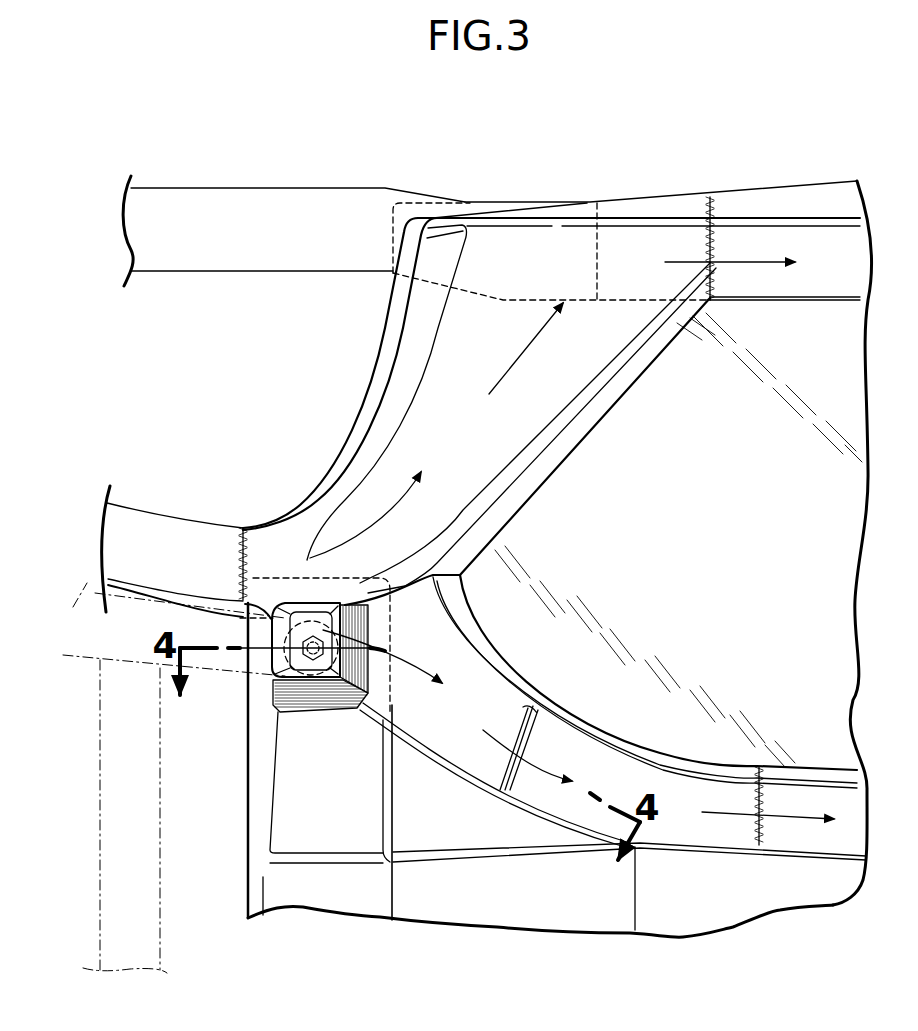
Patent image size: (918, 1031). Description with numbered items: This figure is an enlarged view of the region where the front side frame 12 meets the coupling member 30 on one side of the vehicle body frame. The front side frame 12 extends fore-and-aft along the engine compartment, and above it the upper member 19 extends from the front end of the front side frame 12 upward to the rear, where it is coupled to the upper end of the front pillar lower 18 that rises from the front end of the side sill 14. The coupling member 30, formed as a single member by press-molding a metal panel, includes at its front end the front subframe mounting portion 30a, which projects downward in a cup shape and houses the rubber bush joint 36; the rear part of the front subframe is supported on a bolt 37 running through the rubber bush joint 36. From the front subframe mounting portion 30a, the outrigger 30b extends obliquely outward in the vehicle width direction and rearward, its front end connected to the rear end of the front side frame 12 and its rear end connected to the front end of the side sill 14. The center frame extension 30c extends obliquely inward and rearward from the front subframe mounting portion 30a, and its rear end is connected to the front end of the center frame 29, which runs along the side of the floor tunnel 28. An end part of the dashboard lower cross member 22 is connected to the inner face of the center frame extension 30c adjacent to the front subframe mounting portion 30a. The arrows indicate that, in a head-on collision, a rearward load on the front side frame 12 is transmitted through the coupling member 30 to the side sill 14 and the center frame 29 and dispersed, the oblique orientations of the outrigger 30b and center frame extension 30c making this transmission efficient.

The front side frame 12 is at (180, 533).
The side sill 14 is at (784, 233).
The front pillar lower 18 is at (487, 201).
The upper member 19 is at (208, 204).
The dashboard lower cross member 22 is at (373, 813).
The floor tunnel 28 is at (772, 898).
The center frame 29 is at (812, 797).
The coupling member 30 is at (562, 480).
The front subframe mounting portion 30a is at (316, 703).
The outrigger 30b is at (607, 348).
The center frame extension 30c is at (597, 762).
The rubber bush joint 36 is at (273, 675).
The bolt 37 is at (313, 636).